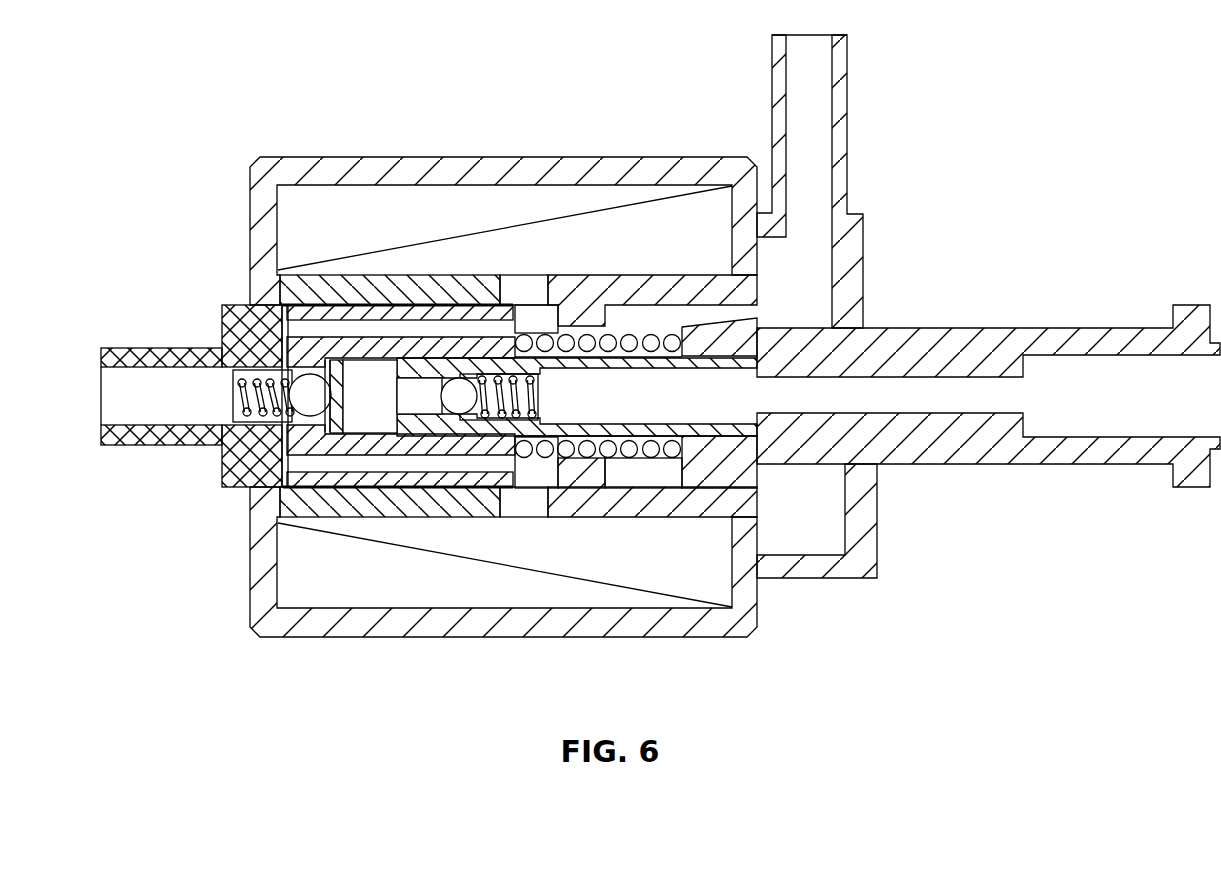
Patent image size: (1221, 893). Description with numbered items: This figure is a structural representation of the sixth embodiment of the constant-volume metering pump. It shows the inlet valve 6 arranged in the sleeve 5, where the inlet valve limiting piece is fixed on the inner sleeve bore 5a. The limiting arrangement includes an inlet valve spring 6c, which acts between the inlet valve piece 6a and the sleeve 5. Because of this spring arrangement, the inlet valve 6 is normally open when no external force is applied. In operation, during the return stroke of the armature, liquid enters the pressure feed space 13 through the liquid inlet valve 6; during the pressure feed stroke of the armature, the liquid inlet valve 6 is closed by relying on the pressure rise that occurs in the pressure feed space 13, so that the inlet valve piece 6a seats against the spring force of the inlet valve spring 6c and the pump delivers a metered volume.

The sleeve 5 is at (315, 443).
The inner sleeve bore 5a is at (362, 422).
The inlet valve 6 is at (311, 392).
The inlet valve piece 6a is at (297, 378).
The inlet valve spring 6c is at (260, 390).
The pressure feed space 13 is at (432, 386).